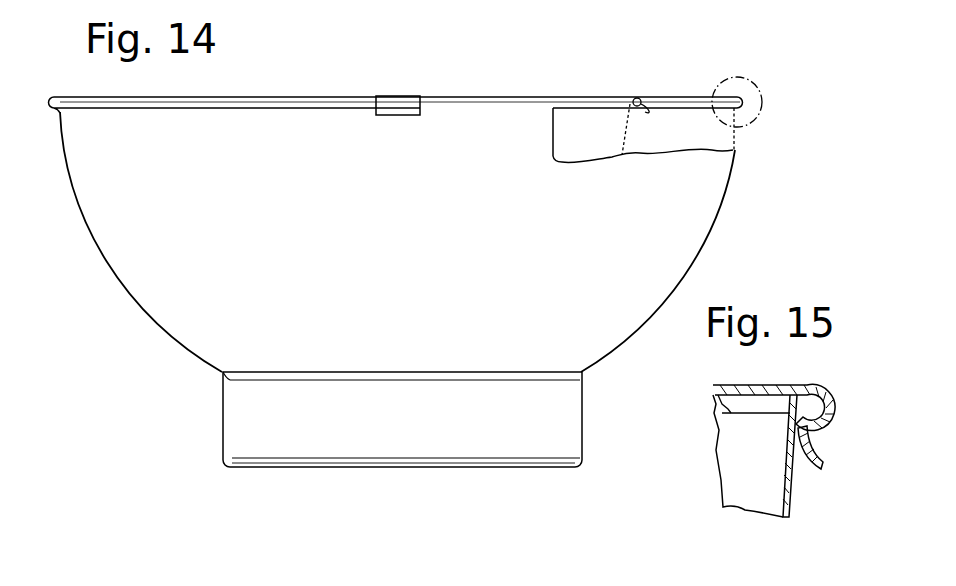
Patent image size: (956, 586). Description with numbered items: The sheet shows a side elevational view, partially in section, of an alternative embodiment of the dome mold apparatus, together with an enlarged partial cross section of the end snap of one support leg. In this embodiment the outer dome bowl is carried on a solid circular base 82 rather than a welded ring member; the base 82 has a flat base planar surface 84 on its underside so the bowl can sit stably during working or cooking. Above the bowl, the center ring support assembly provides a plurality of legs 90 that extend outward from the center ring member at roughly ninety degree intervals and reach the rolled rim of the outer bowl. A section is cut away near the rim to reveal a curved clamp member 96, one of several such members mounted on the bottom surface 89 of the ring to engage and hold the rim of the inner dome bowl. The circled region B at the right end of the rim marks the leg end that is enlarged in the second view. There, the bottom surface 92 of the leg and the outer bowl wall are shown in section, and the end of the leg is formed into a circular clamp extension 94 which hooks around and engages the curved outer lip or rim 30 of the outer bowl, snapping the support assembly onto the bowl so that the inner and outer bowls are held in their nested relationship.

In FIG. 14, the solid circular base 82 is at (567, 417).
In FIG. 14, the flat base planar surface 84 is at (413, 468).
In FIG. 14, the bottom surface of the ring 89 is at (601, 108).
In FIG. 14, the legs 90 is at (411, 96).
In FIG. 14, the bottom surface 92 is at (397, 242).
In FIG. 15, the bottom surface 92 is at (716, 430).
In FIG. 14, the circular clamp extension 94 is at (376, 98).
In FIG. 15, the circular clamp extension 94 is at (834, 402).
In FIG. 14, the curved clamp members 96 is at (641, 104).
In FIG. 15, the outer lip or rim 30 is at (826, 430).
In FIG. 14, the circle B is at (762, 92).